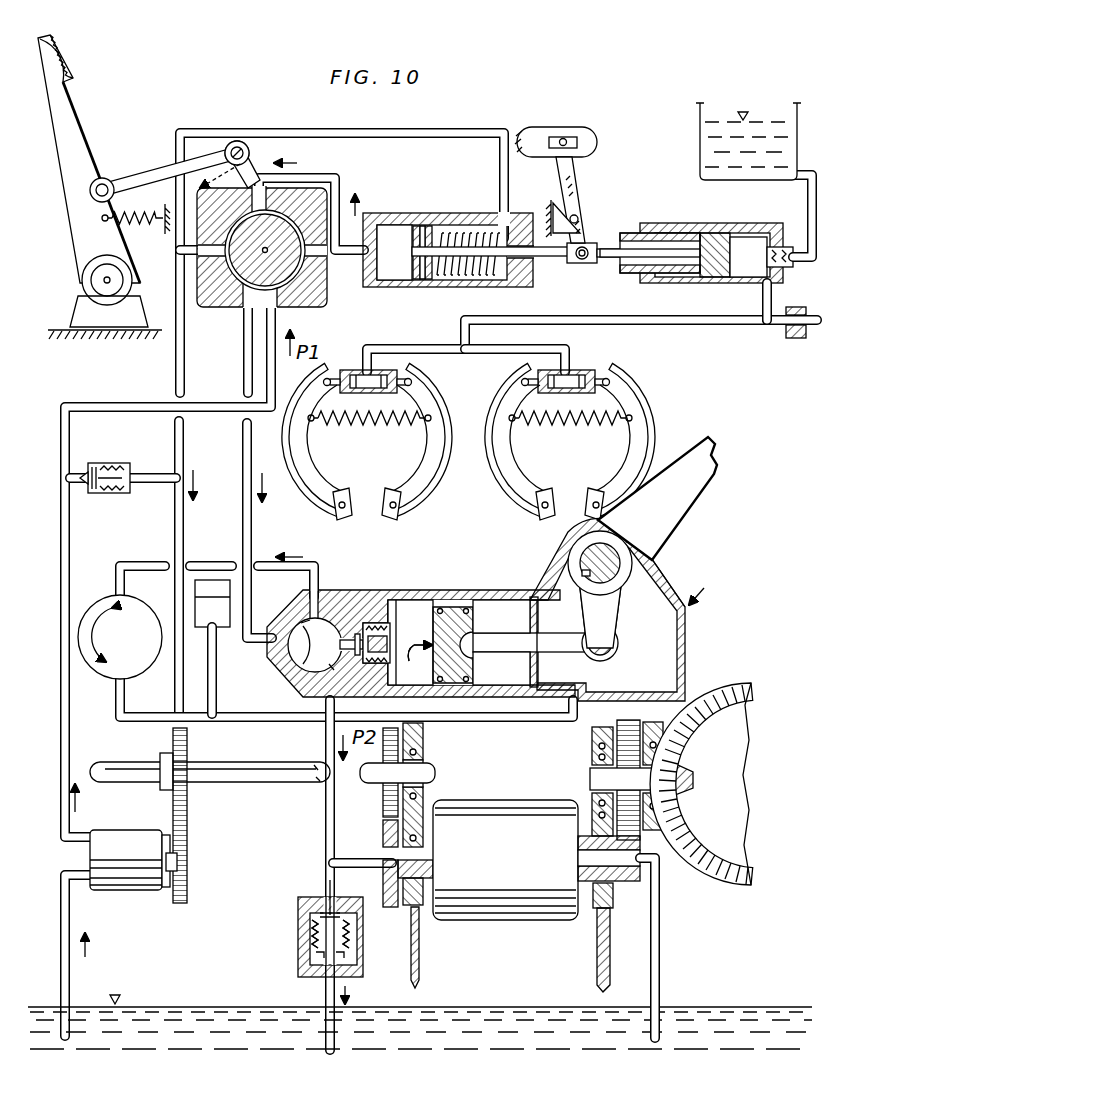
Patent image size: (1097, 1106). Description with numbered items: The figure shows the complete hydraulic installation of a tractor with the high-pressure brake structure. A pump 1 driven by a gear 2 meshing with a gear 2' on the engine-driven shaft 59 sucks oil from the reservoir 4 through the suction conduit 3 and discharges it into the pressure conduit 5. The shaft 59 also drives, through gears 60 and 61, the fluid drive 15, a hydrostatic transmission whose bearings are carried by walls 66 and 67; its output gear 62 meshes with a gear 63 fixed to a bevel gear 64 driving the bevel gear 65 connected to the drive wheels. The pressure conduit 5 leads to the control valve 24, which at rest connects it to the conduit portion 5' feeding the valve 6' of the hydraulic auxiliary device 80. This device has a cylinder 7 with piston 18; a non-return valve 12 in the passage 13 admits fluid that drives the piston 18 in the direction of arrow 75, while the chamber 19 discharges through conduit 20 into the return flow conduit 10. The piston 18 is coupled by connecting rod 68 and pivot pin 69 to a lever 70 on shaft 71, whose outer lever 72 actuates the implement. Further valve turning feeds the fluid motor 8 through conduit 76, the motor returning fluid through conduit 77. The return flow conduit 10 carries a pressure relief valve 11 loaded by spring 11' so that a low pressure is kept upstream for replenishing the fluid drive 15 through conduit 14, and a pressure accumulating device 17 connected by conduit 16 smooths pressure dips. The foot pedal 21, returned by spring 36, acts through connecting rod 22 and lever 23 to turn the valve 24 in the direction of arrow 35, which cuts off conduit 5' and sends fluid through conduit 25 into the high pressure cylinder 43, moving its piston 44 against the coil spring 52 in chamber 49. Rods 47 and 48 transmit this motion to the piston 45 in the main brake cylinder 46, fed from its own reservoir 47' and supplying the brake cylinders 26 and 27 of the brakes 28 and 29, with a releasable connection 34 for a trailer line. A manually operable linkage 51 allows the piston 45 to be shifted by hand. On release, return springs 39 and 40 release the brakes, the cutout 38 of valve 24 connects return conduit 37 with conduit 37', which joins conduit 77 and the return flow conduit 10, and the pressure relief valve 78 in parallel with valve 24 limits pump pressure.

The pump 1 is at (119, 891).
The gear 2 is at (187, 828).
The gear 2' is at (210, 783).
The suction conduit 3 is at (61, 962).
The reservoir 4 is at (177, 1006).
The pressure conduit 5 is at (168, 568).
The pressure conduit portion 5' is at (257, 530).
The ball valve 6' is at (319, 613).
The cylinder 7 is at (420, 603).
The fluid motor 8 is at (113, 598).
The return flow conduit 10 is at (327, 823).
The pressure relief valve 11 is at (328, 930).
The loading spring 11' is at (304, 934).
The non-return valve 12 is at (378, 622).
The passage 13 is at (352, 636).
The conduit 14 is at (352, 861).
The fluid drive 15 is at (499, 921).
The conduit 16 is at (208, 682).
The pressure accumulating device 17 is at (206, 629).
The piston 18 is at (482, 612).
The chamber 19 is at (664, 646).
The conduit 20 is at (471, 721).
The foot pedal 21 is at (74, 58).
The connecting rod 22 is at (114, 183).
The lever 23 is at (250, 156).
The control valve 24 is at (292, 213).
The conduit 25 is at (334, 272).
The brake cylinder 26 is at (350, 372).
The brake cylinder 27 is at (578, 372).
The tractor brake 28 is at (394, 494).
The tractor brake 29 is at (597, 494).
The releasable conduit connection 34 is at (799, 310).
The arrow 35 is at (236, 140).
The spring 36 is at (158, 222).
The return flow conduit 37 is at (328, 206).
The return flow conduit 37' is at (320, 425).
The cutout 38 is at (207, 306).
The return spring 39 is at (378, 427).
The return spring 40 is at (572, 428).
The high pressure cylinder 43 is at (385, 283).
The piston 44 is at (418, 284).
The piston 45 is at (707, 280).
The main brake cylinder 46 is at (748, 280).
The rod 47 is at (504, 274).
The reservoir 47' is at (729, 141).
The rod 48 is at (625, 262).
The chamber 49 is at (505, 288).
The manually operable linkage 51 is at (539, 125).
The coil spring 52 is at (462, 286).
The shaft 59 is at (366, 784).
The gear 60 is at (383, 811).
The gear 61 is at (396, 909).
The gear 62 is at (614, 895).
The gear 63 is at (630, 720).
The bevel gear 64 is at (695, 779).
The bevel gear 65 is at (742, 879).
The wall 66 is at (420, 963).
The wall 67 is at (596, 961).
The connecting rod 68 is at (501, 652).
The pivot pin 69 is at (590, 660).
The lever 70 is at (620, 622).
The shaft 71 is at (618, 567).
The lever 72 is at (690, 499).
The arrow 75 is at (415, 660).
The conduit 76 is at (160, 566).
The conduit 77 is at (263, 720).
The pressure relief valve 78 is at (95, 468).
The auxiliary device 80 is at (679, 571).